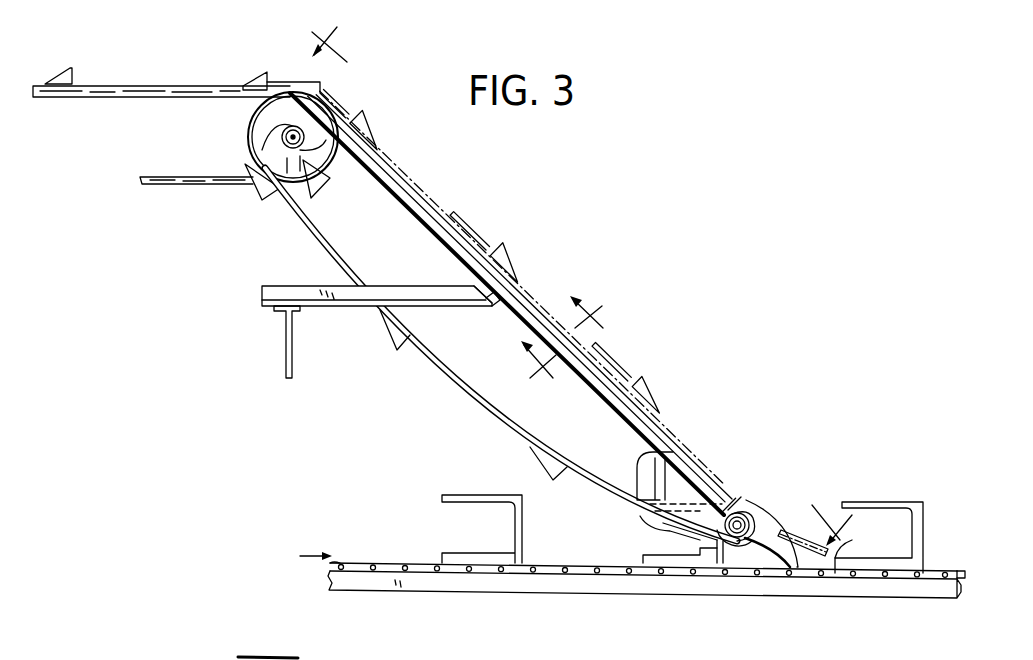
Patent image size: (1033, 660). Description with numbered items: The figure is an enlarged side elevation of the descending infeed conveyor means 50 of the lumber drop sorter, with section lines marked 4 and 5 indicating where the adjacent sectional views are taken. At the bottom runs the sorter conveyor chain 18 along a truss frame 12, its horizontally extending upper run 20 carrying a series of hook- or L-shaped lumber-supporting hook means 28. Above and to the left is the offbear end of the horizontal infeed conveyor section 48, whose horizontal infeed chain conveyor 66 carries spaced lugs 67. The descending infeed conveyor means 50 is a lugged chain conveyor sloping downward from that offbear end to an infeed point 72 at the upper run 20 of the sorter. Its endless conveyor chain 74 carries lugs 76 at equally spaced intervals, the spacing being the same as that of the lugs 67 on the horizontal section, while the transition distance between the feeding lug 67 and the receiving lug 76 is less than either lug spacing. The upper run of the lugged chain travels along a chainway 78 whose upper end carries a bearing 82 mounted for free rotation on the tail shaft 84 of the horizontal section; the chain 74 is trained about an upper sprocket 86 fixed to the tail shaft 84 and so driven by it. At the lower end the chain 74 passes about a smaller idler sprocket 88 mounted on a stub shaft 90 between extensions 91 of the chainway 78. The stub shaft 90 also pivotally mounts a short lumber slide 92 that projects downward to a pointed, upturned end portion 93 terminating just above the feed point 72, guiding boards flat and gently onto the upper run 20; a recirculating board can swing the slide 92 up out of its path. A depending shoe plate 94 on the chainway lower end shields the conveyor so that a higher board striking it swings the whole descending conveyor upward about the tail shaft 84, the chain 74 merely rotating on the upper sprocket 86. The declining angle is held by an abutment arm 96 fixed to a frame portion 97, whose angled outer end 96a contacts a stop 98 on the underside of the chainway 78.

The truss frame 12 is at (573, 594).
The sorter conveyor chain 18 is at (366, 562).
The upper run 20 is at (396, 563).
The hook means 28 is at (487, 553).
The horizontal infeed conveyor section 48 is at (139, 68).
The descending infeed conveyor means 50 is at (648, 256).
The horizontal infeed chain conveyor 66 is at (190, 85).
The lug 67 is at (72, 80).
The infeed point 72 is at (880, 548).
The conveyor chain 74 is at (462, 389).
The lug 76 is at (360, 112).
The chainway 78 is at (406, 184).
The bearing 82 is at (262, 147).
The tail shaft 84 is at (281, 136).
The upper sprocket 86 is at (284, 191).
The idler sprocket 88 is at (646, 519).
The stub shaft 90 is at (747, 516).
The extension 91 is at (741, 505).
The lumber slide 92 is at (774, 545).
The upturned end portion 93 is at (848, 547).
The shoe plate 94 is at (645, 472).
The abutment arm 96 is at (400, 284).
The angled outer end 96a is at (471, 288).
The frame portion 97 is at (283, 331).
The stop 98 is at (497, 301).
The section line 4- 4 is at (582, 286).
The section line 5- 5 is at (570, 350).